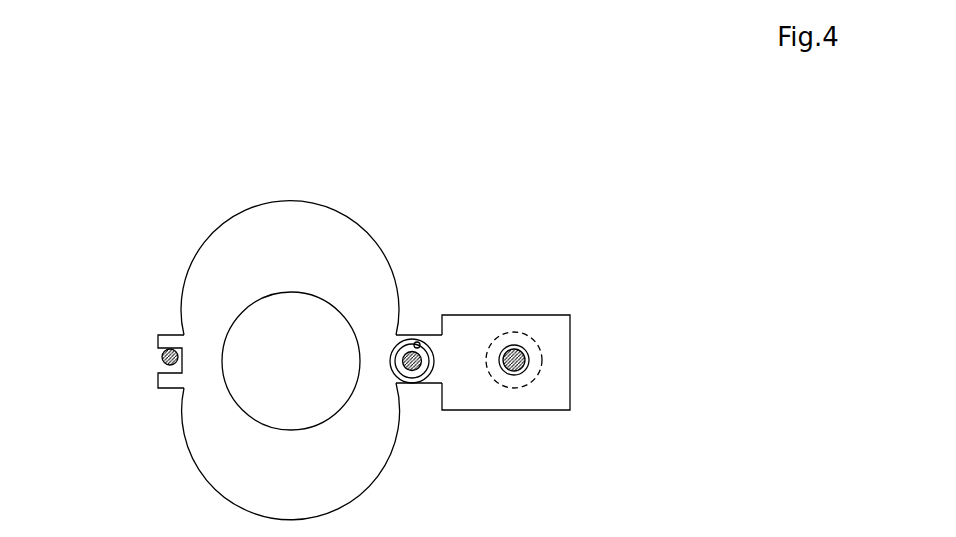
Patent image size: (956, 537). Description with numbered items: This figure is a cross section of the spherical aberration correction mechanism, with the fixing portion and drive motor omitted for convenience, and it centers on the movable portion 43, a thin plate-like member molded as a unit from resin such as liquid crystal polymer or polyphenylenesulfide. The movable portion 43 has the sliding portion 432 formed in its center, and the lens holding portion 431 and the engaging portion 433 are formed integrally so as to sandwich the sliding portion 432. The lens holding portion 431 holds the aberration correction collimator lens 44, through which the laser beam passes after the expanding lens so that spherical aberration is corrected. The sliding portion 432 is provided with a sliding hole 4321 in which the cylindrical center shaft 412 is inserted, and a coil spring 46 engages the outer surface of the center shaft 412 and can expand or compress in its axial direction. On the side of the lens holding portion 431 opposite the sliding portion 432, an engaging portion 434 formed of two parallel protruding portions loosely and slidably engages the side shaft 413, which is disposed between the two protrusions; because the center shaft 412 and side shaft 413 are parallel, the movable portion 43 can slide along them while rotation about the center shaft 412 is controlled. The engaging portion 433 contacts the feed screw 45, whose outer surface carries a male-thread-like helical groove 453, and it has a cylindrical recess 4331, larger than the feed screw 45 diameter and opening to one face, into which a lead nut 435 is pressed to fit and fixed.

The movable portion 43 is at (374, 339).
The lens holding portion 431 is at (218, 295).
The sliding portion 432 is at (453, 380).
The engaging portion 433 is at (563, 323).
The engaging portion 434 is at (158, 337).
The side shaft 413 is at (160, 358).
The aberration correction collimator lens 44 is at (297, 400).
The center shaft 412 is at (410, 368).
The sliding hole 4321 is at (405, 367).
The coil spring 46 is at (424, 385).
The recess 4331 is at (521, 333).
The helical groove 453 is at (498, 348).
The feed screw 45 is at (528, 365).
The lead nut 435 is at (543, 352).